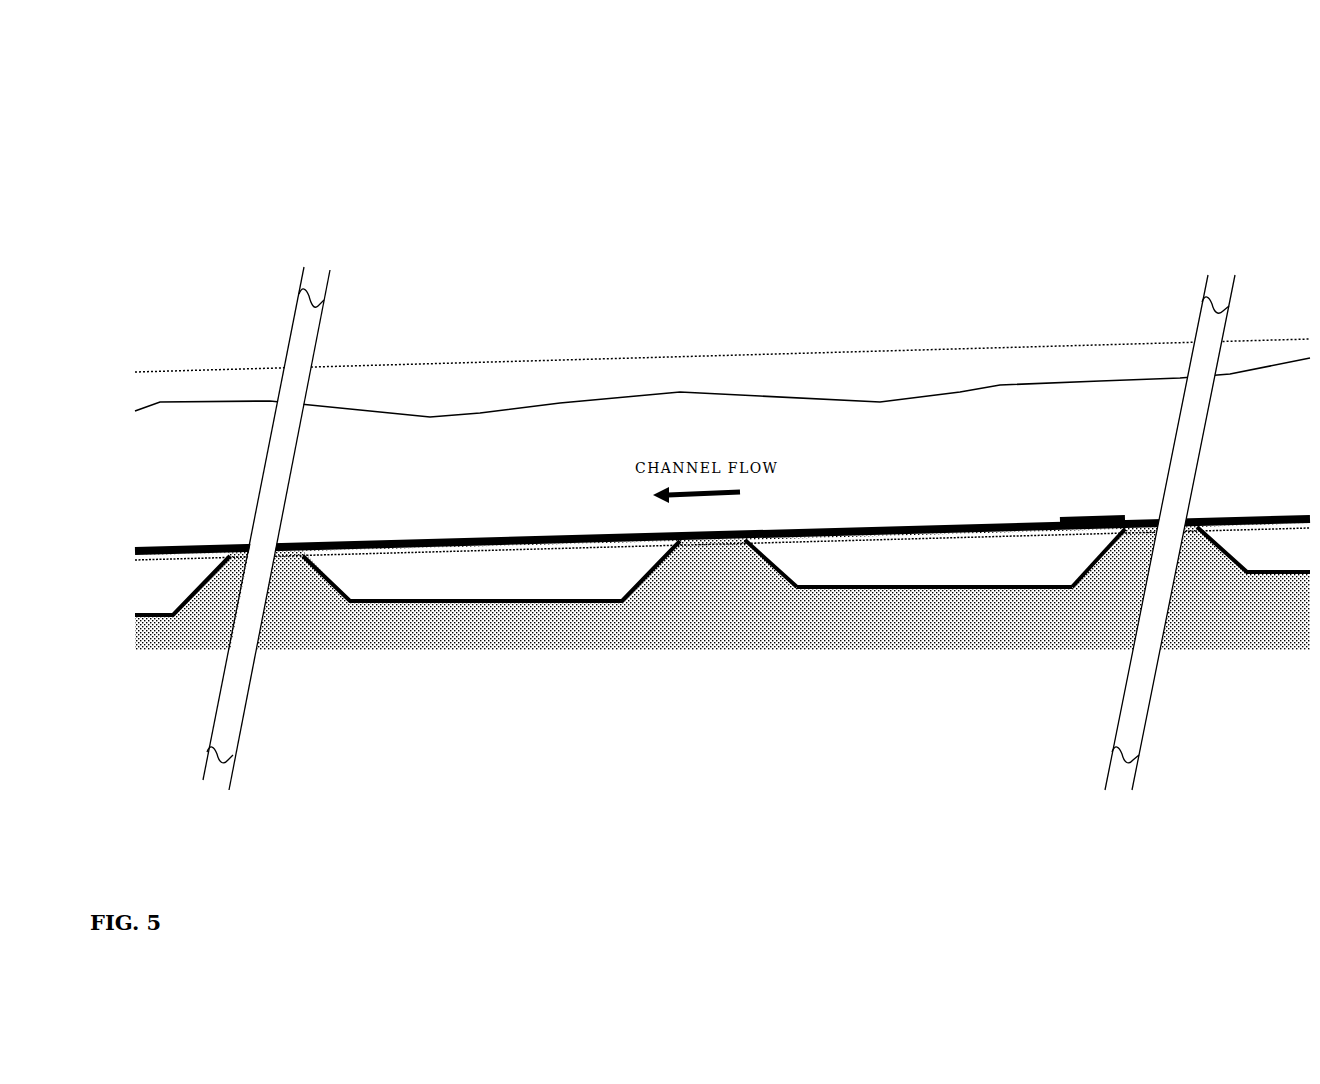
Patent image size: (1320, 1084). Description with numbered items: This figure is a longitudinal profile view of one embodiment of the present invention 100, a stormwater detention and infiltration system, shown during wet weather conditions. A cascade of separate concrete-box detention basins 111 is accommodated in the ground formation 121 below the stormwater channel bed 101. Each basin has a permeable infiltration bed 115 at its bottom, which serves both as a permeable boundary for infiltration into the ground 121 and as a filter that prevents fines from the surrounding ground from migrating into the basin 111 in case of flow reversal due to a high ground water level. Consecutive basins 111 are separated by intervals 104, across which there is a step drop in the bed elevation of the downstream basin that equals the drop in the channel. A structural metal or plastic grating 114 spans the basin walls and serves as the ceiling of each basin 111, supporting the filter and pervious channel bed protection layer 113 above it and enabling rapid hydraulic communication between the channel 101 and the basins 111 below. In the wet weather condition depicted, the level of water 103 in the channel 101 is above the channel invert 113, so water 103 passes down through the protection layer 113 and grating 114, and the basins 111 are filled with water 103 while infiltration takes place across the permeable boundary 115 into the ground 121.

The embodiment of the present invention 100 is at (222, 156).
The stormwater channel bed 101 is at (580, 380).
The water 103 is at (752, 395).
The intervals 104 is at (286, 548).
The concrete-box detention basins 111 is at (618, 580).
The pervious channel bed protection layer 113 is at (1103, 520).
The structural grating 114 is at (1096, 532).
The permeable infiltration bed 115 is at (912, 587).
The ground formation 121 is at (719, 528).